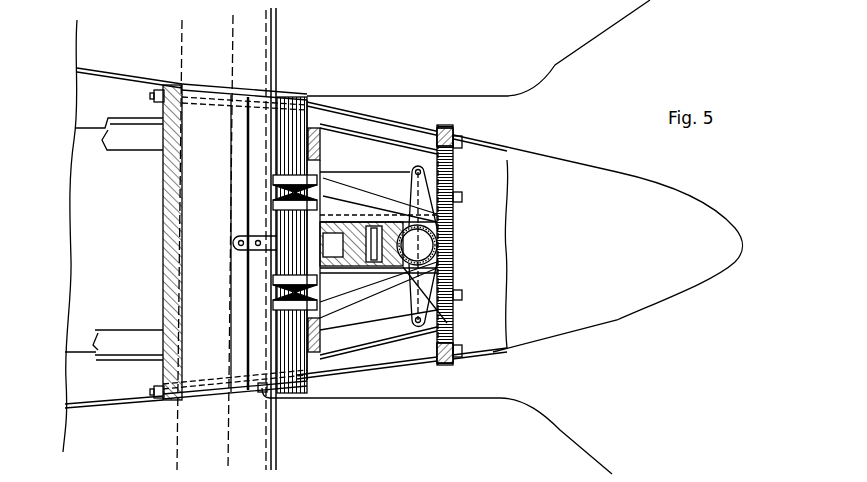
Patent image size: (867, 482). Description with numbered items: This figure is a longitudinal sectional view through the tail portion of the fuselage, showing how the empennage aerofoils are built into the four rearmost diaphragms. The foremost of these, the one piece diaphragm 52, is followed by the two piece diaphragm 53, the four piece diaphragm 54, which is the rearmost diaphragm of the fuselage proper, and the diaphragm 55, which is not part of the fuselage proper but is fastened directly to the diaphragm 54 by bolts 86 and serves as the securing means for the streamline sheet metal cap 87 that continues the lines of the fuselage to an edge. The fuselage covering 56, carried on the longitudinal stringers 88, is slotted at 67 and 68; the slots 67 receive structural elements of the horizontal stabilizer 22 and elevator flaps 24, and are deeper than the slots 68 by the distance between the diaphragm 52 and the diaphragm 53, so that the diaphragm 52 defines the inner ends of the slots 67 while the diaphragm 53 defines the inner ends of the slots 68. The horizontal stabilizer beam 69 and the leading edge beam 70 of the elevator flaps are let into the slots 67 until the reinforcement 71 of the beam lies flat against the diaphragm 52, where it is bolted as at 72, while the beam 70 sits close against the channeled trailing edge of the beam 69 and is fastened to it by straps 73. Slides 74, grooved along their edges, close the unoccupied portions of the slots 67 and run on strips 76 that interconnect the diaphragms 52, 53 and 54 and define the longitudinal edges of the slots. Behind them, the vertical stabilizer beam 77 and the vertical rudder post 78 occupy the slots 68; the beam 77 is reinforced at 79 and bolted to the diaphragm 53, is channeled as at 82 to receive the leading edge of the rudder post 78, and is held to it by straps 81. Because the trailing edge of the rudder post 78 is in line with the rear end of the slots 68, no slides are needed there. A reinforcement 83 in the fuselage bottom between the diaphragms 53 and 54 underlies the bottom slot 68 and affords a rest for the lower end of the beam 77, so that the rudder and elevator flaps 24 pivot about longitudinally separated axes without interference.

The horizontal stabilizer 22 is at (88, 33).
The elevator flaps 24 is at (598, 30).
The diaphragm 52 is at (166, 235).
The diaphragm 53 is at (330, 132).
The diaphragm 54 is at (438, 124).
The diaphragm 55 is at (507, 160).
The covering 56 is at (95, 411).
The slots 67 is at (183, 83).
The slots 68 is at (372, 236).
The horizontal stabilizer beam 69 is at (256, 443).
The leading edge beam 70 is at (296, 380).
The reinforcement 71 is at (186, 287).
The bolts 72 is at (158, 91).
The straps 73 is at (272, 250).
The slides 74 is at (367, 118).
The strips 76 is at (326, 128).
The vertical stabilizer beam 77 is at (405, 272).
The vertical rudder post 78 is at (438, 236).
The reinforcement 79 is at (343, 232).
The straps 81 is at (430, 304).
The channel 82 is at (437, 258).
The reinforcement 83 is at (343, 300).
The bolts 86 is at (458, 158).
The cap 87 is at (692, 222).
The stringers 88 is at (129, 143).